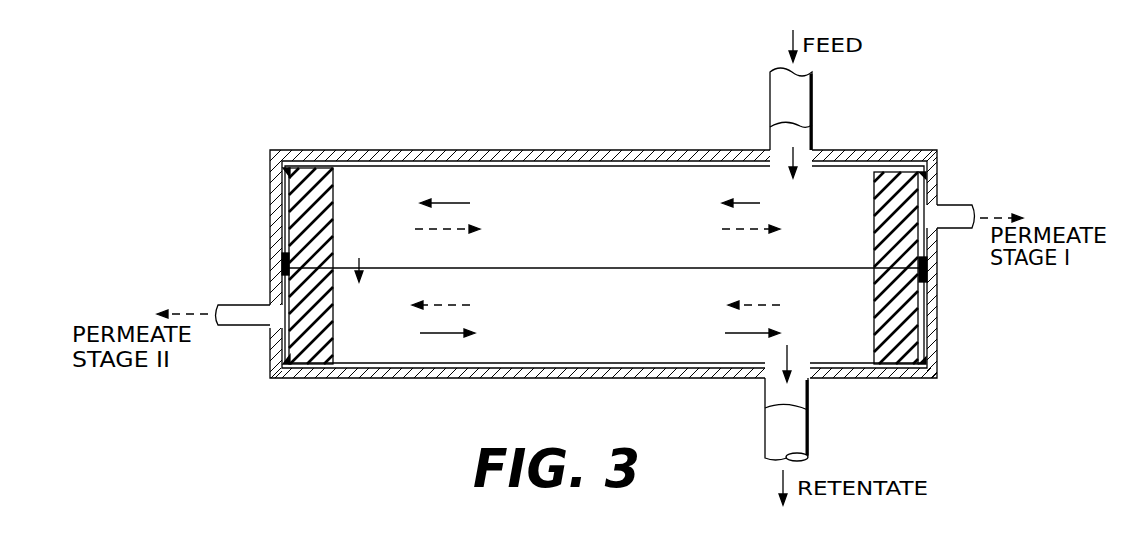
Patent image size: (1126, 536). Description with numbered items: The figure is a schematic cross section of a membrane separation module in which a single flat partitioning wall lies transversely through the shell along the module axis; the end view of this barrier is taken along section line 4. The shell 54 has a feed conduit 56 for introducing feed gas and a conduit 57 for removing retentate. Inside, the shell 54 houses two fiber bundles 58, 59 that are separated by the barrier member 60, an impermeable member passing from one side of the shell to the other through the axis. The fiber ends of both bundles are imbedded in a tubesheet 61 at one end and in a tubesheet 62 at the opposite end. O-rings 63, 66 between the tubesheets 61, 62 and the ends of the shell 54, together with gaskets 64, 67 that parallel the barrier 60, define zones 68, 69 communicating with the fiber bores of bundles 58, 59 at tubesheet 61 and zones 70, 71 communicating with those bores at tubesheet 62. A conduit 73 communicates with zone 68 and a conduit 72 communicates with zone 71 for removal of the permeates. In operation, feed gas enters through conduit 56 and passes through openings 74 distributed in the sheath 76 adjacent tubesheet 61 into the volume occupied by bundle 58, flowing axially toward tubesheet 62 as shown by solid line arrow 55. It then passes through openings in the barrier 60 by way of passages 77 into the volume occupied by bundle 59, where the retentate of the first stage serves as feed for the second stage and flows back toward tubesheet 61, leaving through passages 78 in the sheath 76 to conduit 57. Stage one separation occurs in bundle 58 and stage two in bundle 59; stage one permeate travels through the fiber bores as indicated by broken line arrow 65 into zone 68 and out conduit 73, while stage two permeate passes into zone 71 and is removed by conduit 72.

The section line 4- 4 is at (575, 147).
The shell 54 is at (655, 152).
The solid line arrow 55 is at (444, 200).
The feed conduit 56 is at (815, 108).
The retentate conduit 57 is at (810, 414).
The fiber bundle 58 is at (579, 254).
The fiber bundle 59 is at (581, 329).
The barrier member 60 is at (649, 270).
The tubesheet 61 is at (873, 250).
The tubesheet 62 is at (336, 250).
The O-ring 63 is at (932, 184).
The gasket 64 is at (928, 278).
The broken line arrow 65 is at (446, 231).
The O-ring 66 is at (270, 178).
The gasket 67 is at (282, 262).
The zone 68 is at (926, 246).
The zone 69 is at (922, 325).
The zone 70 is at (284, 236).
The zone 71 is at (284, 300).
The conduit 72 is at (256, 328).
The conduit 73 is at (975, 207).
The openings 74 is at (800, 174).
The sheath 76 is at (616, 168).
The passages 77 is at (366, 259).
The passages 78 is at (794, 366).